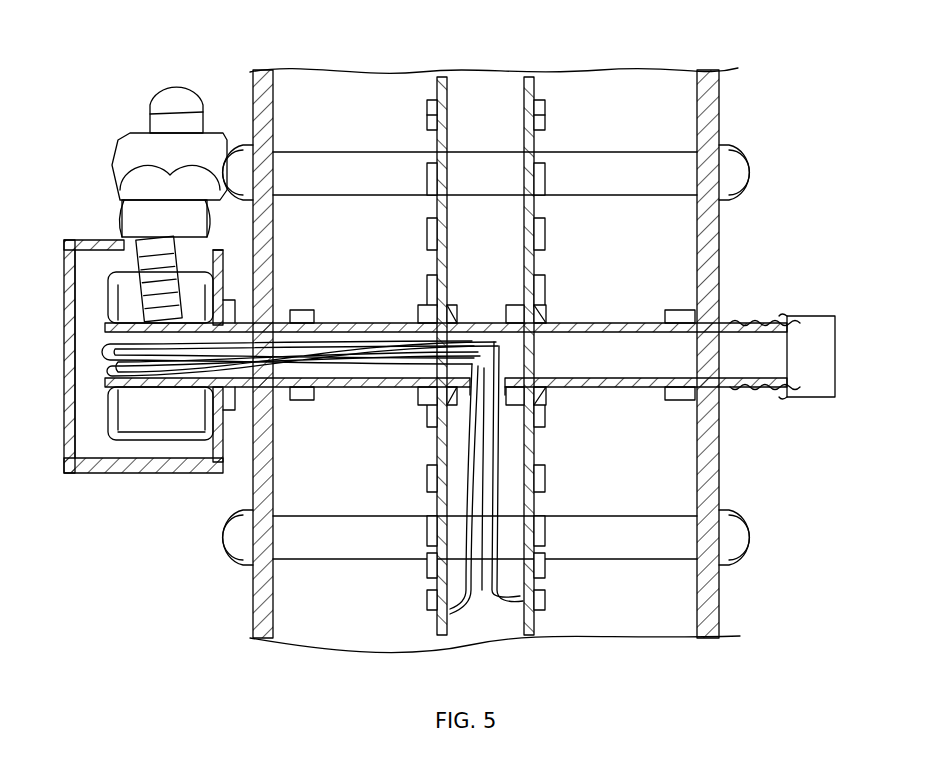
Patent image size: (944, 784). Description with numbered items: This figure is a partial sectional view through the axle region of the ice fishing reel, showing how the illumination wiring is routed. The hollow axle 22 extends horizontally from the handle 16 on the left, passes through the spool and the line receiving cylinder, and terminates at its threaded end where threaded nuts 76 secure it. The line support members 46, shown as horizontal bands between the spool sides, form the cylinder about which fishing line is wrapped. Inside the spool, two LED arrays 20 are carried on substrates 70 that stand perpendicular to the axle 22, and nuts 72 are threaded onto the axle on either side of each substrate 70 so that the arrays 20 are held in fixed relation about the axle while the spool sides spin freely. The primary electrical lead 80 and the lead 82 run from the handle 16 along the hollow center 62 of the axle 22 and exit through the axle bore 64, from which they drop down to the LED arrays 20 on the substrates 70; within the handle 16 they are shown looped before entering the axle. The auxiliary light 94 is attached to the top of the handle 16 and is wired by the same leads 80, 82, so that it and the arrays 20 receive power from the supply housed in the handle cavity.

The handle 16 is at (146, 470).
The LED array 20 is at (388, 115).
The axle 22 is at (573, 320).
The line support member 46 is at (657, 178).
The hollow center 62 is at (738, 354).
The axle bore 64 is at (447, 432).
The substrate 70 is at (530, 76).
The nut 72 is at (512, 308).
The threaded nut 76 is at (813, 370).
The primary electrical lead 80 is at (472, 470).
The lead 82 is at (472, 470).
The auxiliary light 94 is at (170, 102).